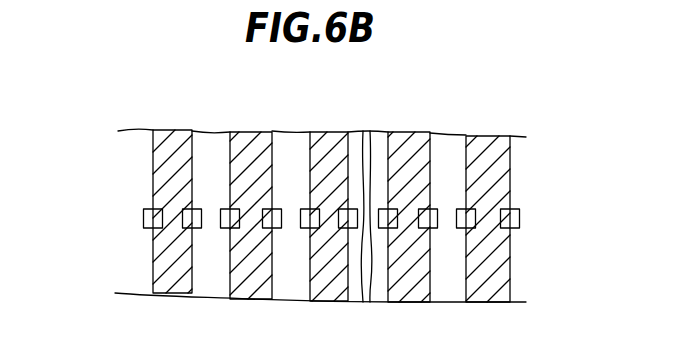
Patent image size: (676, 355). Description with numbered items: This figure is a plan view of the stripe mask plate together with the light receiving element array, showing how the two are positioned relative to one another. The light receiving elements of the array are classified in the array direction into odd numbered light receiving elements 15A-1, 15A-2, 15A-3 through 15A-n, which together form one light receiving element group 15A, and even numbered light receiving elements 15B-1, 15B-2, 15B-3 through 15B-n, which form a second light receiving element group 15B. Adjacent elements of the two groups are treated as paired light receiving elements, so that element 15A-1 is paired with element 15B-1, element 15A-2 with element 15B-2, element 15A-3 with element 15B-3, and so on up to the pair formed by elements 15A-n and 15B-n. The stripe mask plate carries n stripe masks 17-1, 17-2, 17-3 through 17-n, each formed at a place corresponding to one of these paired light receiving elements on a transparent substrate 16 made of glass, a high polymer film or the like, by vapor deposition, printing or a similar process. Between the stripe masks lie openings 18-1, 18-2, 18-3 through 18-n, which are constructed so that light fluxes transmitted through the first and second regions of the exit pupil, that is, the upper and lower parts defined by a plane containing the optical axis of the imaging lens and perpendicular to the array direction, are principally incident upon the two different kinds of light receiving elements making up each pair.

The light receiving element group 15A is at (136, 237).
The light receiving element group 15B is at (197, 232).
The odd numbered light receiving element 15A-1 is at (147, 209).
The even numbered light receiving element 15B-1 is at (195, 209).
The odd numbered light receiving element 15A-2 is at (223, 229).
The even numbered light receiving element 15B-2 is at (275, 229).
The odd numbered light receiving element 15A-3 is at (297, 209).
The even numbered light receiving element 15B-3 is at (351, 229).
The odd numbered light receiving element 15A-n is at (462, 209).
The even numbered light receiving element 15B-n is at (515, 220).
The transparent substrate 16 is at (521, 266).
The stripe mask 17-1 is at (166, 133).
The stripe mask 17-2 is at (247, 131).
The stripe mask 17-3 is at (335, 144).
The stripe mask 17-n is at (500, 139).
The opening 18-1 is at (133, 147).
The opening 18-2 is at (215, 145).
The opening 18-3 is at (295, 146).
The opening 18-n is at (448, 154).